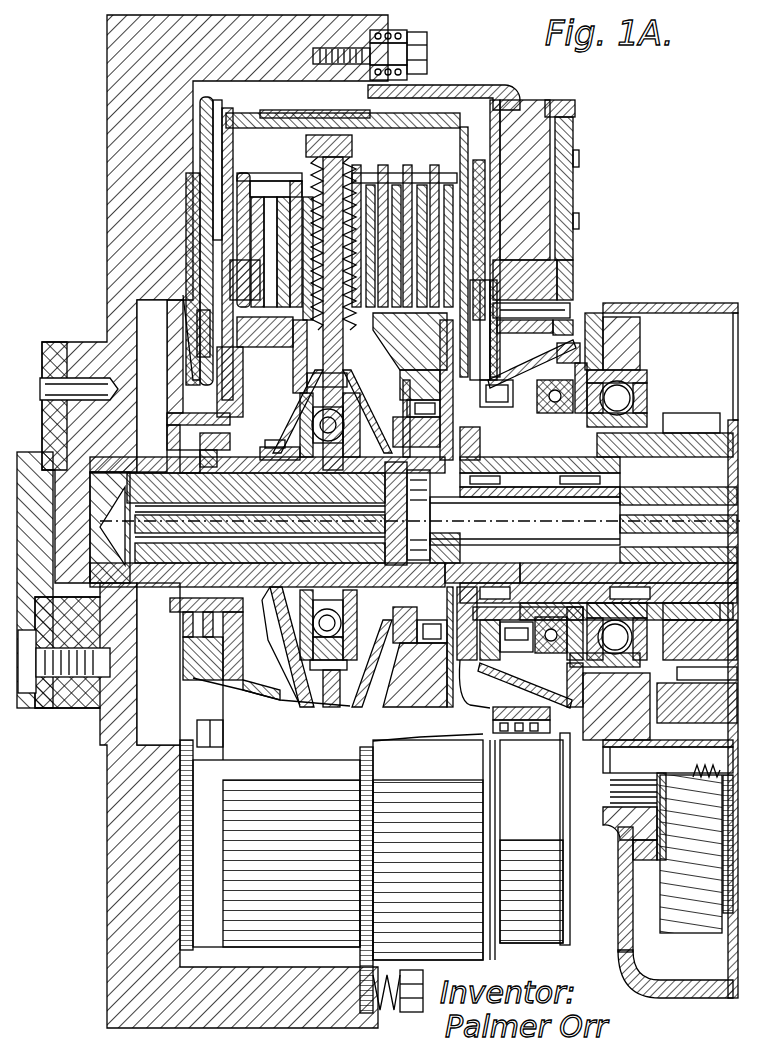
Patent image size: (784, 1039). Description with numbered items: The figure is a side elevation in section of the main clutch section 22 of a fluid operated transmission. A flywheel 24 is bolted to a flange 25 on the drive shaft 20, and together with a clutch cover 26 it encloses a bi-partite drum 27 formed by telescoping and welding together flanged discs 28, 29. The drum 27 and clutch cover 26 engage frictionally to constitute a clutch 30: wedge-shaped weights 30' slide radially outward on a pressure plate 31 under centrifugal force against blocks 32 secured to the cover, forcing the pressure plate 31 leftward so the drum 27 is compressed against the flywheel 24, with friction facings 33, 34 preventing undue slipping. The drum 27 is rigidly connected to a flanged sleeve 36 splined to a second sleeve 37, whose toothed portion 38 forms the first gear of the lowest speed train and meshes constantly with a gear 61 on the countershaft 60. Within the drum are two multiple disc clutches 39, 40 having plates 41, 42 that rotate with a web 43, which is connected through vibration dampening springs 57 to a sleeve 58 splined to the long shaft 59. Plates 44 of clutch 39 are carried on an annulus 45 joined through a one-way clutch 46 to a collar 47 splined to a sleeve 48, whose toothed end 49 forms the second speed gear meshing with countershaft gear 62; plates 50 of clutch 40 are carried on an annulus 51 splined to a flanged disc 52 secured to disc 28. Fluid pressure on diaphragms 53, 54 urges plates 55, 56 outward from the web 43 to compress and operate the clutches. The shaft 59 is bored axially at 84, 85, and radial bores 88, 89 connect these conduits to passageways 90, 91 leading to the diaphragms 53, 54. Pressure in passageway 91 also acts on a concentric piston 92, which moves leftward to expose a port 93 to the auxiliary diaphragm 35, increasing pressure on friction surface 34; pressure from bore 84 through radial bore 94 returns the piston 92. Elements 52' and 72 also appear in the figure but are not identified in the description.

The drive shaft 20 is at (22, 450).
The main clutch section 22 is at (452, 113).
The flywheel 24 is at (117, 157).
The flange 25 is at (52, 340).
The clutch cover 26 is at (500, 97).
The bi-partite drum 27 is at (262, 100).
The flanged disc 28 is at (228, 156).
The flanged disc 29 is at (462, 170).
The clutch 30 is at (600, 146).
The wedge-shaped weights 30' is at (599, 230).
The pressure plate 31 is at (578, 116).
The blocks 32 is at (575, 181).
The friction facing 33 is at (481, 207).
The friction facing 34 is at (199, 197).
The auxiliary diaphragm 35 is at (186, 255).
The flanged sleeve 36 is at (533, 378).
The second sleeve 37 is at (622, 440).
The toothed portion 38 is at (683, 428).
The multiple disc clutch 39 is at (423, 157).
The multiple disc clutch 40 is at (273, 160).
The plates 41 is at (397, 185).
The plates 42 is at (293, 187).
The web 43 is at (350, 135).
The plates 44 is at (410, 341).
The annulus 45 is at (420, 373).
The one-way clutch 46 is at (423, 415).
The collar 47 is at (445, 370).
The sleeve 48 is at (560, 482).
The toothed end 49 is at (730, 380).
The plates 50 is at (261, 303).
The annulus 51 is at (262, 368).
The flanged disc 52 is at (285, 411).
The link 52' is at (266, 449).
The diaphragm 53 is at (346, 195).
The diaphragm 54 is at (321, 138).
The plate 55 is at (348, 386).
The plate 56 is at (306, 425).
The vibration dampening springs 57 is at (327, 640).
The sleeve 58 is at (397, 512).
The long shaft 59 is at (427, 515).
The countershaft 60 is at (656, 774).
The gear 61 is at (656, 930).
The gear 62 is at (730, 915).
The housing wall 72 is at (648, 962).
The axial bore 84 is at (678, 547).
The axial bore 85 is at (678, 510).
The radial bore 88 is at (260, 539).
The radial bore 89 is at (256, 495).
The passageway 90 is at (267, 522).
The passageway 91 is at (260, 512).
The concentric piston 92 is at (260, 512).
The port 93 is at (173, 445).
The radial bore 94 is at (176, 610).